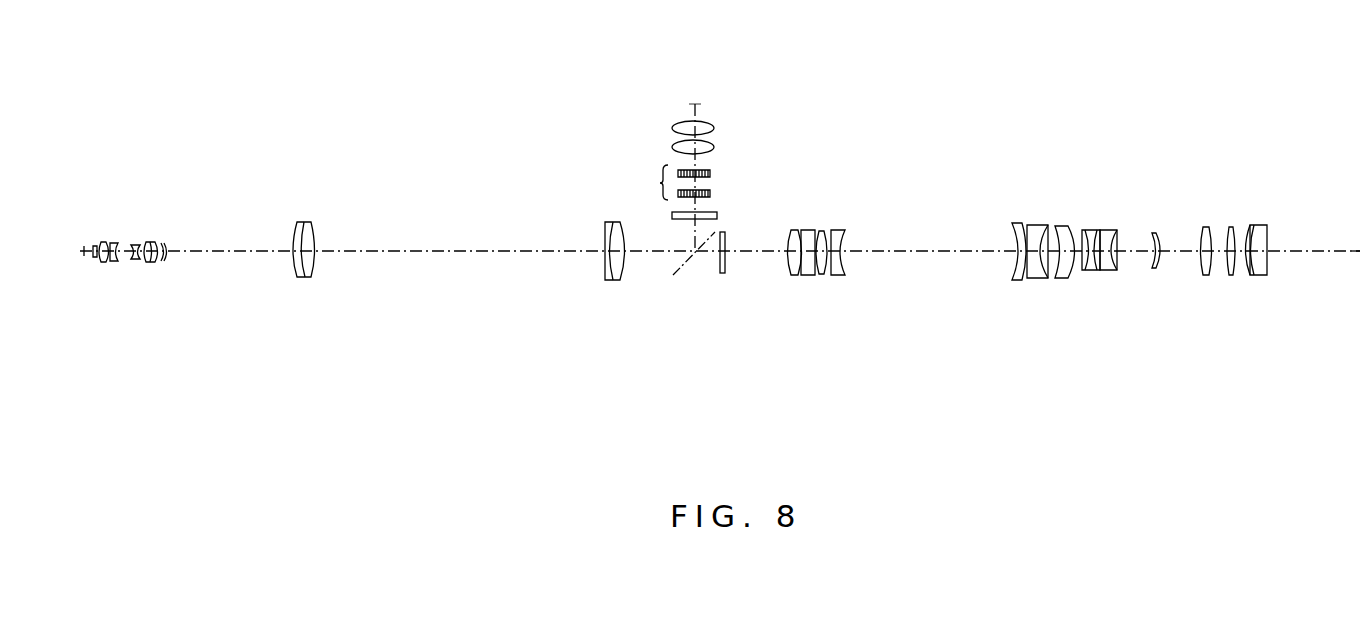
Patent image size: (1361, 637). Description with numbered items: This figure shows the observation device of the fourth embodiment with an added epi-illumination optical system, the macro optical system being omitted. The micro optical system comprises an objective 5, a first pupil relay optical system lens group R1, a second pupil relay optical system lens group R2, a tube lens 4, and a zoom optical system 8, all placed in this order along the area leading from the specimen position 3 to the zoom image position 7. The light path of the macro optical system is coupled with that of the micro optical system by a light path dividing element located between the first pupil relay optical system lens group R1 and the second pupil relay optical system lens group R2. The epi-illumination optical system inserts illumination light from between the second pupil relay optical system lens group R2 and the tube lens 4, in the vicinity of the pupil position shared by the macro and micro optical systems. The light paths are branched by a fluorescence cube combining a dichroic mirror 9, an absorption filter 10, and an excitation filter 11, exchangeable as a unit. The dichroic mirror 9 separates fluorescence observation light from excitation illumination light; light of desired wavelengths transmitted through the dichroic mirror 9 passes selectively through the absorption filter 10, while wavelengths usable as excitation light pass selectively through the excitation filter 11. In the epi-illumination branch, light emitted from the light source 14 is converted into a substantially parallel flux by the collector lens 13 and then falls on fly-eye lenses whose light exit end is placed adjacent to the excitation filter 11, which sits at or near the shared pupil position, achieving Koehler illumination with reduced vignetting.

The specimen position 3 is at (83, 250).
The objective 5 is at (168, 276).
The first pupil relay optical system lens group R1 is at (306, 279).
The second pupil relay optical system lens group R2 is at (613, 282).
The dichroic mirror 9 is at (688, 260).
The absorption filter 10 is at (727, 239).
The excitation filter 11 is at (711, 210).
The collector lens 13 is at (716, 125).
The light source 14 is at (692, 107).
The tube lens 4 is at (850, 283).
The zoom optical system 8 is at (1275, 283).
The zoom image position 7 is at (1357, 246).